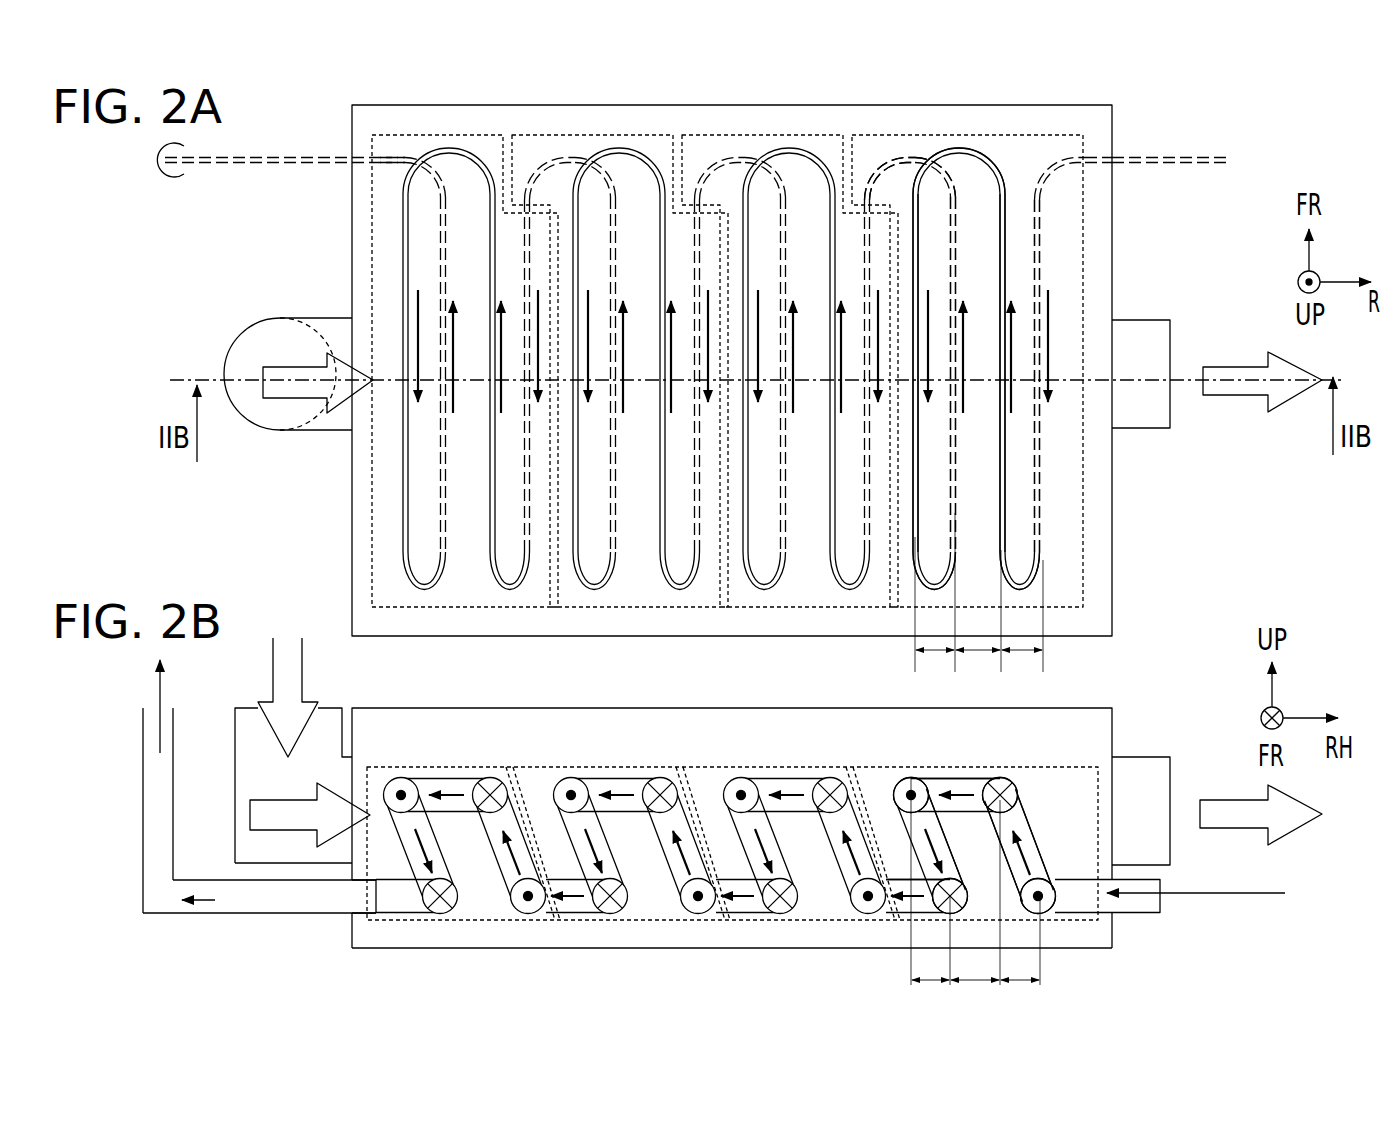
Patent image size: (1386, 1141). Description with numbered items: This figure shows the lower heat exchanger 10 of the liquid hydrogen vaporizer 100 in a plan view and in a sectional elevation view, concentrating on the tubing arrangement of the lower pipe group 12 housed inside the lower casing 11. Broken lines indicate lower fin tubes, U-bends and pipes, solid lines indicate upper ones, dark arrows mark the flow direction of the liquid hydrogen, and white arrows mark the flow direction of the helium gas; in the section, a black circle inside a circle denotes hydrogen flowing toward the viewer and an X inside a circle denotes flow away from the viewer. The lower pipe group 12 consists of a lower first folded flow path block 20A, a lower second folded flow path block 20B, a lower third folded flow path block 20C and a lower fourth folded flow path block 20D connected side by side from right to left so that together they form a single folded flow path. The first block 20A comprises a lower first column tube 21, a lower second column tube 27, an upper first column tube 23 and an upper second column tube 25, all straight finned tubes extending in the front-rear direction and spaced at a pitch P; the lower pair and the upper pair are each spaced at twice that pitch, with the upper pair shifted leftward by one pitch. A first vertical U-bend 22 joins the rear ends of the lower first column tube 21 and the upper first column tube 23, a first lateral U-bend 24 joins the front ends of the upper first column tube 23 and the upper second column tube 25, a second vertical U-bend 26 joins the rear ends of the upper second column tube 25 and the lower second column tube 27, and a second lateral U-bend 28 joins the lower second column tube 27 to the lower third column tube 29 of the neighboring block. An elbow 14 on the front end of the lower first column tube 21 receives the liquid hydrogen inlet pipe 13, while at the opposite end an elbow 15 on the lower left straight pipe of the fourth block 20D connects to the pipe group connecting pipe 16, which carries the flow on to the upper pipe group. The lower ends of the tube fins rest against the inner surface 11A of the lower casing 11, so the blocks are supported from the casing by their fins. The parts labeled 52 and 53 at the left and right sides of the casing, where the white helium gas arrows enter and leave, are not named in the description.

In FIG. 2A, the vaporizer 100 is at (131, 200).
In FIG. 2A, the lower heat exchanger 10 is at (186, 284).
In FIG. 2B, the lower heat exchanger 10 is at (122, 718).
In FIG. 2A, the lower casing 11 is at (690, 105).
In FIG. 2B, the lower casing 11 is at (665, 948).
In FIG. 2B, the inner surface of the lower casing 11A is at (700, 948).
In FIG. 2A, the lower pipe group 12 is at (774, 374).
In FIG. 2B, the lower pipe group 12 is at (765, 825).
In FIG. 2A, the liquid hydrogen inlet pipe 13 is at (1303, 160).
In FIG. 2B, the liquid hydrogen inlet pipe 13 is at (1152, 913).
In FIG. 2A, the elbow 14 is at (1066, 162).
In FIG. 2B, the elbow 14 is at (1047, 878).
In FIG. 2A, the elbow 15 is at (413, 162).
In FIG. 2B, the elbow 15 is at (393, 916).
In FIG. 2A, the pipe group connecting pipe 16 is at (373, 137).
In FIG. 2B, the pipe group connecting pipe 16 is at (143, 813).
In FIG. 2A, the lower first folded flow path block 20A is at (1001, 374).
In FIG. 2B, the lower first folded flow path block 20A is at (984, 830).
In FIG. 2A, the lower second folded flow path block 20B is at (792, 126).
In FIG. 2B, the lower second folded flow path block 20B is at (761, 766).
In FIG. 2A, the lower third folded flow path block 20C is at (626, 126).
In FIG. 2B, the lower third folded flow path block 20C is at (598, 766).
In FIG. 2A, the lower fourth folded flow path block 20D is at (456, 126).
In FIG. 2B, the lower fourth folded flow path block 20D is at (433, 766).
In FIG. 2A, the lower first column tube 21 is at (1041, 455).
In FIG. 2B, the lower first column tube 21 is at (1041, 913).
In FIG. 2A, the first vertical U-bend 22 is at (1021, 590).
In FIG. 2B, the first vertical U-bend 22 is at (1062, 872).
In FIG. 2A, the upper first column tube 23 is at (1007, 253).
In FIG. 2B, the upper first column tube 23 is at (1008, 772).
In FIG. 2A, the first lateral U-bend 24 is at (973, 150).
In FIG. 2B, the first lateral U-bend 24 is at (958, 772).
In FIG. 2A, the upper second column tube 25 is at (910, 485).
In FIG. 2B, the upper second column tube 25 is at (912, 777).
In FIG. 2A, the second vertical U-bend 26 is at (935, 591).
In FIG. 2B, the second vertical U-bend 26 is at (1005, 872).
In FIG. 2A, the lower second column tube 27 is at (958, 513).
In FIG. 2B, the lower second column tube 27 is at (950, 913).
In FIG. 2A, the second lateral U-bend 28 is at (913, 155).
In FIG. 2B, the second lateral U-bend 28 is at (907, 907).
In FIG. 2A, the lower third column tube 29 is at (862, 257).
In FIG. 2B, the lower third column tube 29 is at (868, 907).
In FIG. 2A, the air inlet 52 is at (258, 432).
In FIG. 2B, the air inlet 52 is at (240, 793).
In FIG. 2A, the air outlet 53 is at (1152, 432).
In FIG. 2B, the air outlet 53 is at (1160, 757).